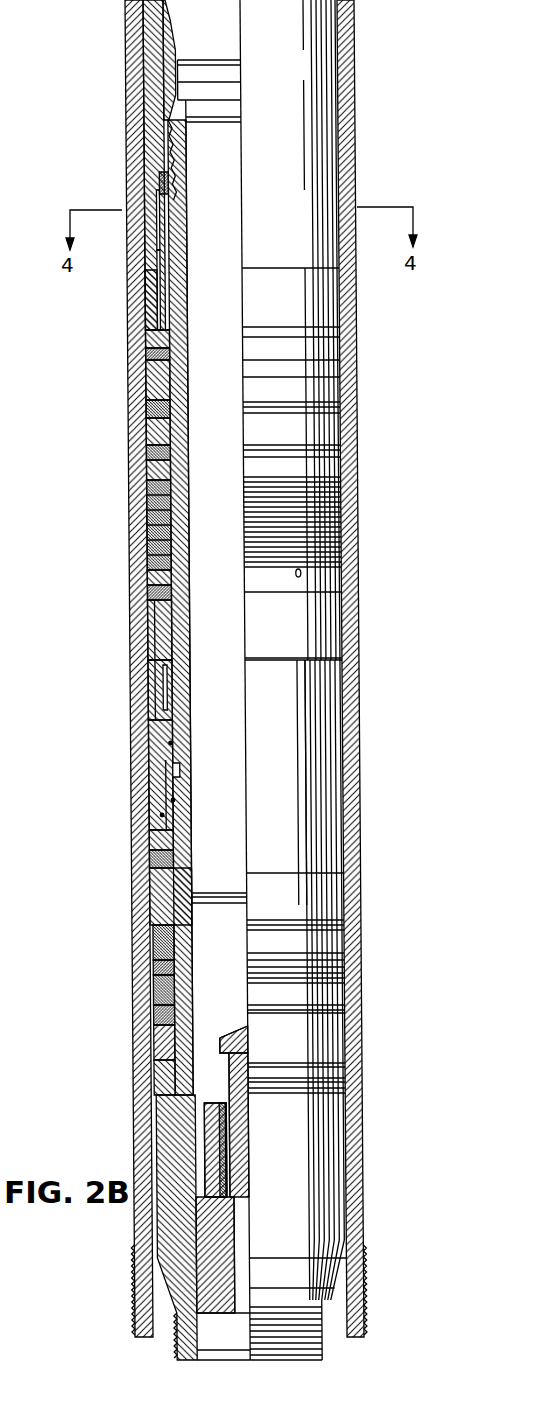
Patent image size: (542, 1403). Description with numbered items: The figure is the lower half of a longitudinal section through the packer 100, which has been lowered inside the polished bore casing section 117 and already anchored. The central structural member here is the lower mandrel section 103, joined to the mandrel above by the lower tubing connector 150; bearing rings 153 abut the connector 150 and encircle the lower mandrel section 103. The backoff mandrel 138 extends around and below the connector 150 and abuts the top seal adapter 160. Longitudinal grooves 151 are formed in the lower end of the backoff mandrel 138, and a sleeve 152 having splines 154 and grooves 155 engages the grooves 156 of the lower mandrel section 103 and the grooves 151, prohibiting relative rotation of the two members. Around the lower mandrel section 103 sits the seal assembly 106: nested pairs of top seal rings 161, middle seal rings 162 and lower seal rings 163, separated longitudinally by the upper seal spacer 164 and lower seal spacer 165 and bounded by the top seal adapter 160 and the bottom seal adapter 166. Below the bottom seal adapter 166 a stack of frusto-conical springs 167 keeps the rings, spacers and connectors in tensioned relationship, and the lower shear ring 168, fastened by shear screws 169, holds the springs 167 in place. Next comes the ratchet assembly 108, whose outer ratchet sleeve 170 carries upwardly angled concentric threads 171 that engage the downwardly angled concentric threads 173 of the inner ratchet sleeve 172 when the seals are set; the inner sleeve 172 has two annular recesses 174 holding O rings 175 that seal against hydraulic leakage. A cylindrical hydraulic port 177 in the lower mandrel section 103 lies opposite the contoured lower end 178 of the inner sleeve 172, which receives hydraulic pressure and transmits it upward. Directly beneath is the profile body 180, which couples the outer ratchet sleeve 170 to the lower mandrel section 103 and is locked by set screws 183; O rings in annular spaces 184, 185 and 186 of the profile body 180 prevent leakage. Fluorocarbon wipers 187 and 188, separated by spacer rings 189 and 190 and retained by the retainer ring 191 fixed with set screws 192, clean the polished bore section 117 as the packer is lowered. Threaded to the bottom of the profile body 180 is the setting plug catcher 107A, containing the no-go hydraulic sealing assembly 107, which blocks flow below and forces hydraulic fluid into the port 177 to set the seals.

The packer 100 is at (12, 750).
The lower mandrel section 103 is at (186, 500).
The seal assembly 106 is at (136, 412).
The setting plug assembly 107 is at (200, 1103).
The setting plug catcher 107A is at (168, 1258).
The ratchet assembly 108 is at (136, 658).
The polished bore casing section 117 is at (150, 52).
The backoff mandrel 138 is at (150, 22).
The lower tubing connector 150 is at (166, 93).
The longitudinal grooves 151 is at (166, 150).
The sleeve 152 is at (160, 284).
The bearing rings 153 is at (162, 186).
The splines 154 is at (160, 222).
The grooves 155 is at (165, 258).
The grooves 156 is at (167, 310).
The top seal adapter 160 is at (150, 345).
The top seal rings 161 is at (152, 365).
The middle seal rings 162 is at (168, 408).
The lower seal rings 163 is at (168, 450).
The upper seal spacer 164 is at (150, 388).
The lower seal spacer 165 is at (150, 431).
The bottom seal adapter 166 is at (152, 462).
The frusto-conical springs 167 is at (150, 517).
The lower shear ring 168 is at (168, 587).
The shear screws 169 is at (150, 576).
The outer ratchet sleeve 170 is at (152, 632).
The upwardly angled concentric threads 171 is at (152, 607).
The inner ratchet sleeve 172 is at (168, 655).
The downwardly angled concentric threads 173 is at (156, 677).
The annular recesses 174 is at (160, 762).
The O rings 175 is at (172, 745).
The hydraulic port 177 is at (176, 770).
The contoured lower end 178 is at (165, 773).
The profile body 180 is at (165, 828).
The set screws 183 is at (152, 860).
The annular space 184 is at (173, 800).
The annular space 185 is at (162, 815).
The annular space 186 is at (180, 888).
The wiper 187 is at (152, 943).
The wiper 188 is at (152, 992).
The spacer ring 189 is at (152, 965).
The spacer ring 190 is at (152, 1018).
The retainer ring 191 is at (155, 1062).
The set screws 192 is at (155, 1040).